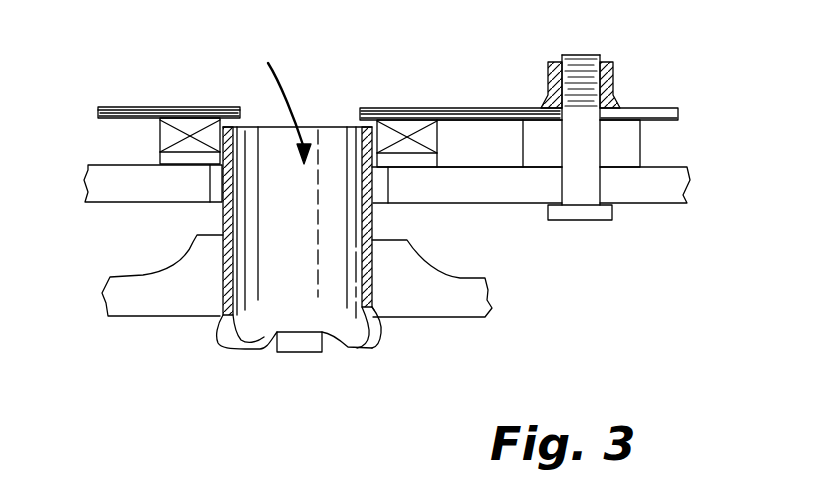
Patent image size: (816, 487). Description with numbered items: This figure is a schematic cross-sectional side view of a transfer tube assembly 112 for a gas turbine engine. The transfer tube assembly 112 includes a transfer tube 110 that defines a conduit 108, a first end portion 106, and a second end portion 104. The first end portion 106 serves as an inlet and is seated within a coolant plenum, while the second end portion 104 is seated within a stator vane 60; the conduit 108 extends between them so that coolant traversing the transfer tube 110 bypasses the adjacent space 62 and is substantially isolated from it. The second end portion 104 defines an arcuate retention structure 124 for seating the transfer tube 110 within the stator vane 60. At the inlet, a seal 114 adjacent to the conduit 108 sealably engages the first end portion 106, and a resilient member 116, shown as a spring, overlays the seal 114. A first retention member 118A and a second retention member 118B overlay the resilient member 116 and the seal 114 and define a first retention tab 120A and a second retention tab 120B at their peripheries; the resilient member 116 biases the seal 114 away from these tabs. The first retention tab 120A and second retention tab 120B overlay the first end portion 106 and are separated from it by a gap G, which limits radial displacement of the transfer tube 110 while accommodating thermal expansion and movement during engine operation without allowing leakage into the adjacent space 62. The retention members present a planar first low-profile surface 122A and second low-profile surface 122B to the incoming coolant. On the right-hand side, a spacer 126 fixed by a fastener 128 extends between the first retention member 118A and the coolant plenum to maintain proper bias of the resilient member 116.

The stator vane 60 is at (458, 303).
The adjacent space 62 is at (493, 250).
The second end portion 104 is at (258, 322).
The first end portion 106 is at (271, 146).
The conduit 108 is at (305, 257).
The transfer tube 110 is at (335, 223).
The transfer tube assembly 112 is at (172, 374).
The seal 114 is at (172, 158).
The resilient member 116 is at (165, 135).
The first retention member 118A is at (515, 115).
The second retention member 118B is at (113, 110).
The first retention tab 120A is at (372, 113).
The second retention tab 120B is at (232, 108).
The first low-profile surface 122A is at (472, 103).
The second low-profile surface 122B is at (165, 103).
The arcuate retention structure 124 is at (382, 353).
The spacer 126 is at (620, 145).
The fastener 128 is at (585, 193).
The gap G is at (353, 123).